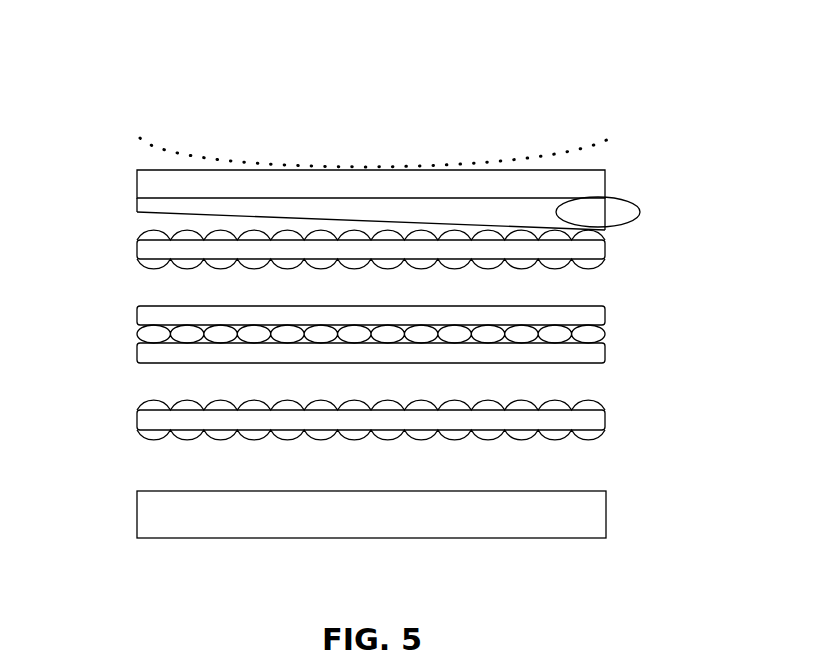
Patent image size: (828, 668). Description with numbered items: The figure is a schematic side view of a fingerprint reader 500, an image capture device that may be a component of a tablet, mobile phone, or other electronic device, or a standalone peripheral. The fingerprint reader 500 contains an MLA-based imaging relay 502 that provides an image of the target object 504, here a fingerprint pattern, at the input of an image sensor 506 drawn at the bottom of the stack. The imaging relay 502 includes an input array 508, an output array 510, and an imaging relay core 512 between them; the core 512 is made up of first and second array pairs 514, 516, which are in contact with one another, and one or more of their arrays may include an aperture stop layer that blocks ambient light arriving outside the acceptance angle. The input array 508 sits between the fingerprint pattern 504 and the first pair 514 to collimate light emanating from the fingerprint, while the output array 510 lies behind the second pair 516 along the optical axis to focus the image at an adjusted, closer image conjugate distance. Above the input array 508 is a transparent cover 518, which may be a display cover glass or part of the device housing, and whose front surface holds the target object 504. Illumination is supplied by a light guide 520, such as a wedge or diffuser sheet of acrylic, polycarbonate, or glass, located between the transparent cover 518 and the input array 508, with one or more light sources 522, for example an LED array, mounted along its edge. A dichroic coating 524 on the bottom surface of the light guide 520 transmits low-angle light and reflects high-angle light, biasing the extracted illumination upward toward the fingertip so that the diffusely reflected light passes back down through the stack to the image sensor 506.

The fingerprint reader 500 is at (645, 86).
The imaging relay 502 is at (93, 228).
The target object 504 is at (162, 152).
The image sensor 506 is at (392, 523).
The input array 508 is at (627, 239).
The output array 510 is at (627, 434).
The imaging relay core 512 is at (612, 255).
The first array pair 514 is at (137, 262).
The second array pair 516 is at (137, 335).
The transparent cover 518 is at (137, 180).
The light guide 520 is at (137, 205).
The light source 522 is at (633, 199).
The dichroic coating 524 is at (149, 213).